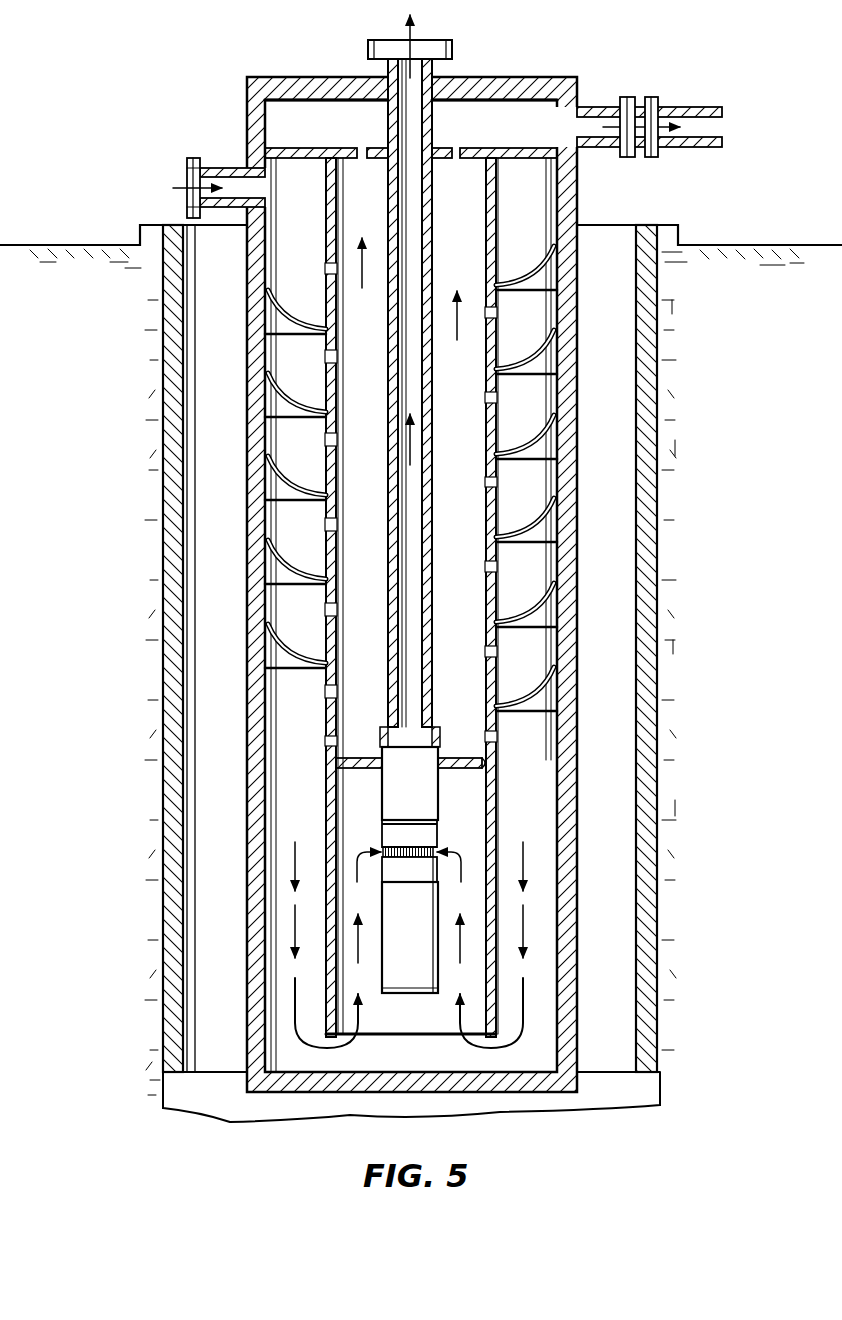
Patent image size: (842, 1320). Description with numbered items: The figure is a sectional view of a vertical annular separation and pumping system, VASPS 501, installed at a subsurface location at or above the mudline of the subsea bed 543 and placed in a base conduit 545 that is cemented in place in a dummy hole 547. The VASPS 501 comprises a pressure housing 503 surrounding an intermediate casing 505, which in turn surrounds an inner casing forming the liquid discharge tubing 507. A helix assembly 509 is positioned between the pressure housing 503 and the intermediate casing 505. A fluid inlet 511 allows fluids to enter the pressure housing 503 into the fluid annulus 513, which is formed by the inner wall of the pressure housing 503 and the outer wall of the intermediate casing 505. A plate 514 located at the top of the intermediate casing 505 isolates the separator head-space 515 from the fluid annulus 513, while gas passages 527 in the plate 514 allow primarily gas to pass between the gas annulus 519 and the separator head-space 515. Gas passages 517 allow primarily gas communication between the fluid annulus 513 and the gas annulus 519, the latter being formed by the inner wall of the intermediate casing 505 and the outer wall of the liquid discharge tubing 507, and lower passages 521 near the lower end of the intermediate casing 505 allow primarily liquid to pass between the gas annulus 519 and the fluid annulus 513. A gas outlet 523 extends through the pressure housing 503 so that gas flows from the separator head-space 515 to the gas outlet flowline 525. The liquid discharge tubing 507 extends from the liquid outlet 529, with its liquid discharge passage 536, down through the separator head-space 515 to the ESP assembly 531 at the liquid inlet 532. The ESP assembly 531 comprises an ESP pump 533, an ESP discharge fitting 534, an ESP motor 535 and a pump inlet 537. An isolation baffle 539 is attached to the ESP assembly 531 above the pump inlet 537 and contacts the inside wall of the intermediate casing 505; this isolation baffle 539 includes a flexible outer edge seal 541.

The VASPS 501 is at (250, 66).
The pressure housing 503 is at (250, 96).
The intermediate casing 505 is at (326, 365).
The liquid discharge tubing 507 is at (432, 444).
The helix assembly 509 is at (300, 398).
The fluid inlet 511 is at (192, 163).
The fluid annulus 513 is at (288, 173).
The plate 514 is at (527, 152).
The separator head-space 515 is at (352, 118).
The gas passages 517 is at (300, 417).
The gas annulus 519 is at (467, 205).
The lower passages 521 is at (300, 605).
The gas outlet 523 is at (628, 100).
The gas outlet flowline 525 is at (700, 108).
The gas passages 527 is at (456, 150).
The liquid outlet 529 is at (440, 45).
The ESP assembly 531 is at (427, 807).
The liquid inlet 532 is at (440, 732).
The ESP pump 533 is at (440, 800).
The ESP discharge fitting 534 is at (360, 760).
The ESP motor 535 is at (430, 900).
The liquid discharge passage 536 is at (414, 579).
The pump inlet 537 is at (390, 850).
The isolation baffle 539 is at (484, 763).
The flexible outer edge seal 541 is at (395, 790).
The subsea bed 543 is at (100, 245).
The base conduit 545 is at (176, 297).
The dummy hole 547 is at (185, 1093).